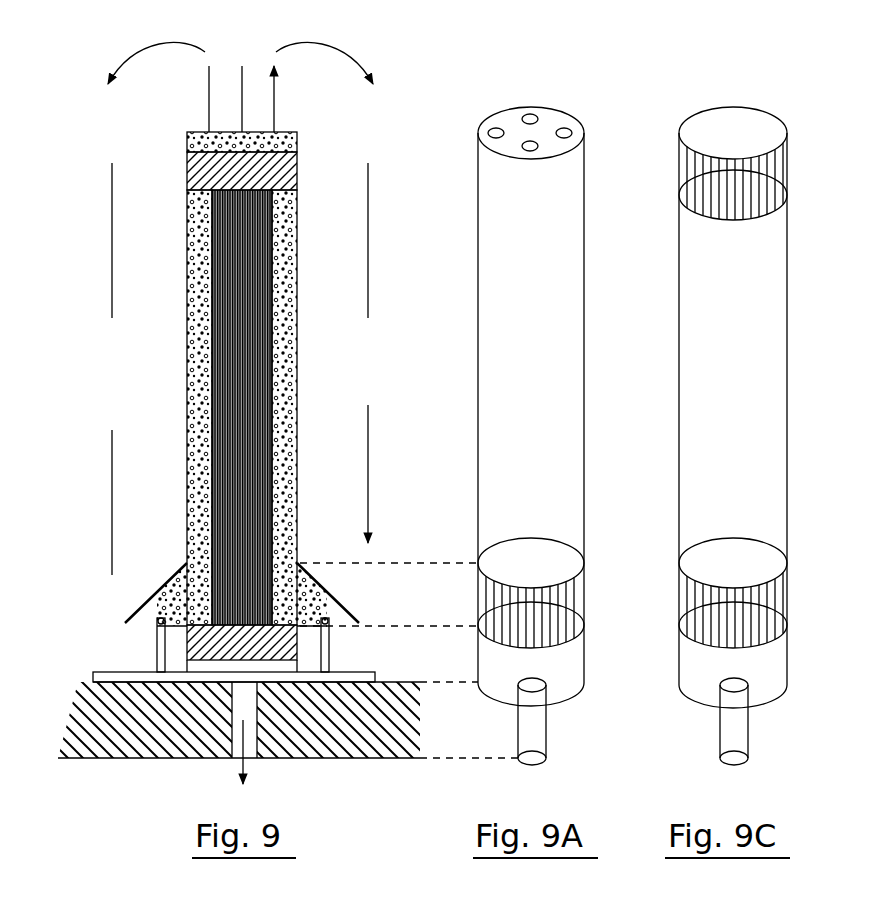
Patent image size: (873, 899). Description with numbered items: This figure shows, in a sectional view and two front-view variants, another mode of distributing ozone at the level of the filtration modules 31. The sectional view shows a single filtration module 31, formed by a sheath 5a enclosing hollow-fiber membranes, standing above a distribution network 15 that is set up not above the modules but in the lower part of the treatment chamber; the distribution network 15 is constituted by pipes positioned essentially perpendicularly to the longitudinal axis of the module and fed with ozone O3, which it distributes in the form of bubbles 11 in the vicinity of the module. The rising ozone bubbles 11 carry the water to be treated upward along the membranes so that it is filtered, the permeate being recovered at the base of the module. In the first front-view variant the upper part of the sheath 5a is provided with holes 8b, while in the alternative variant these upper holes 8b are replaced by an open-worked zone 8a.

In FIG. 9, the ozone bubbles 11 is at (190, 312).
In FIG. 9, the filtration module 31 is at (185, 392).
In FIG. 9, the distribution network 15 is at (152, 634).
In FIG. 9, the ozone O3 is at (92, 677).
In FIG. 9A, the sheath 5a is at (512, 448).
In FIG. 9A, the holes 8b is at (571, 130).
In FIG. 9C, the open-worked zone 8a is at (788, 157).